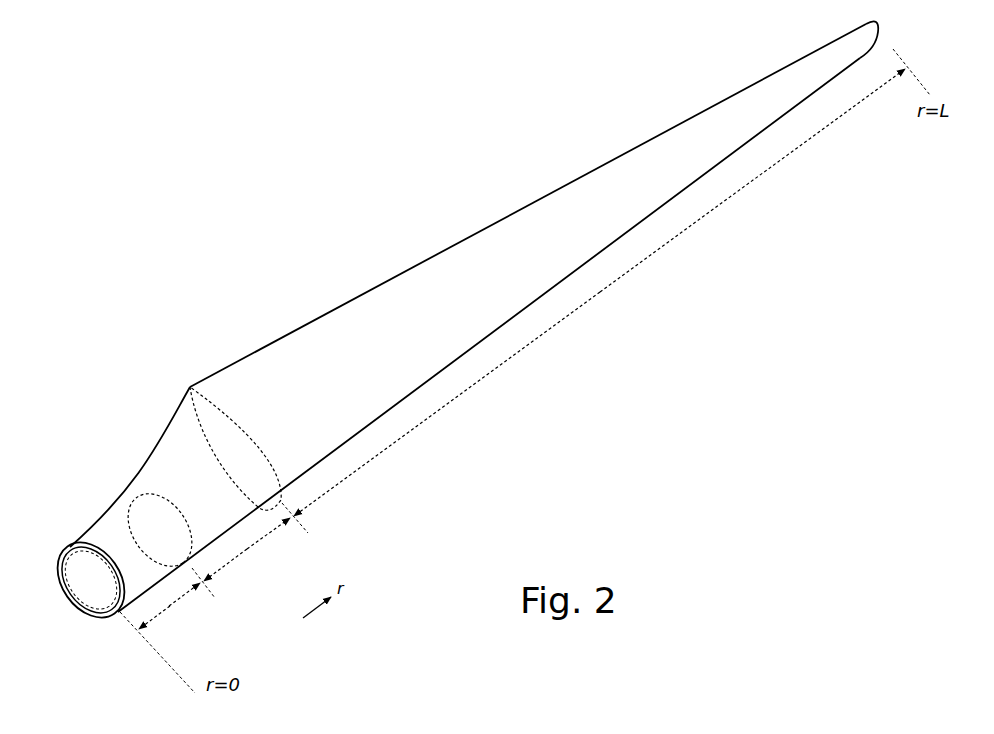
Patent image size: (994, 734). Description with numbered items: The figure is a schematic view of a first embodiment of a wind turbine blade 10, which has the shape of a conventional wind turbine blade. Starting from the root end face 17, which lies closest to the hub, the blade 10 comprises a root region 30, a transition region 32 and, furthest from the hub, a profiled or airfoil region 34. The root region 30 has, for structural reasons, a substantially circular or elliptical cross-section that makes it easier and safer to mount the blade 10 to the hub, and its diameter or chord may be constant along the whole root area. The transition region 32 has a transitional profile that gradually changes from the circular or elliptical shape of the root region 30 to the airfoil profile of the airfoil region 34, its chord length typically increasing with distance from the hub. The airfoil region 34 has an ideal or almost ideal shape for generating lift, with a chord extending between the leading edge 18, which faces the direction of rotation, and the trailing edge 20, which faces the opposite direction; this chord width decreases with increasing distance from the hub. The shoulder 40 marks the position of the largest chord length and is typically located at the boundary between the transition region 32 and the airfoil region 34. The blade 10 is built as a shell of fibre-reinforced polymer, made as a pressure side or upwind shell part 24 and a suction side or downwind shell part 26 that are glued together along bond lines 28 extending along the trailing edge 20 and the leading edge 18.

The wind turbine blade 10 is at (324, 210).
The root end face 17 is at (84, 566).
The leading edge 18 is at (630, 232).
The trailing edge 20 is at (520, 205).
The pressure side shell part 24 is at (97, 542).
The suction side shell part 26 is at (86, 613).
The bond lines 28 is at (74, 543).
The root region 30 is at (173, 604).
The transition region 32 is at (250, 547).
The airfoil region 34 is at (540, 337).
The shoulder 40 is at (190, 387).